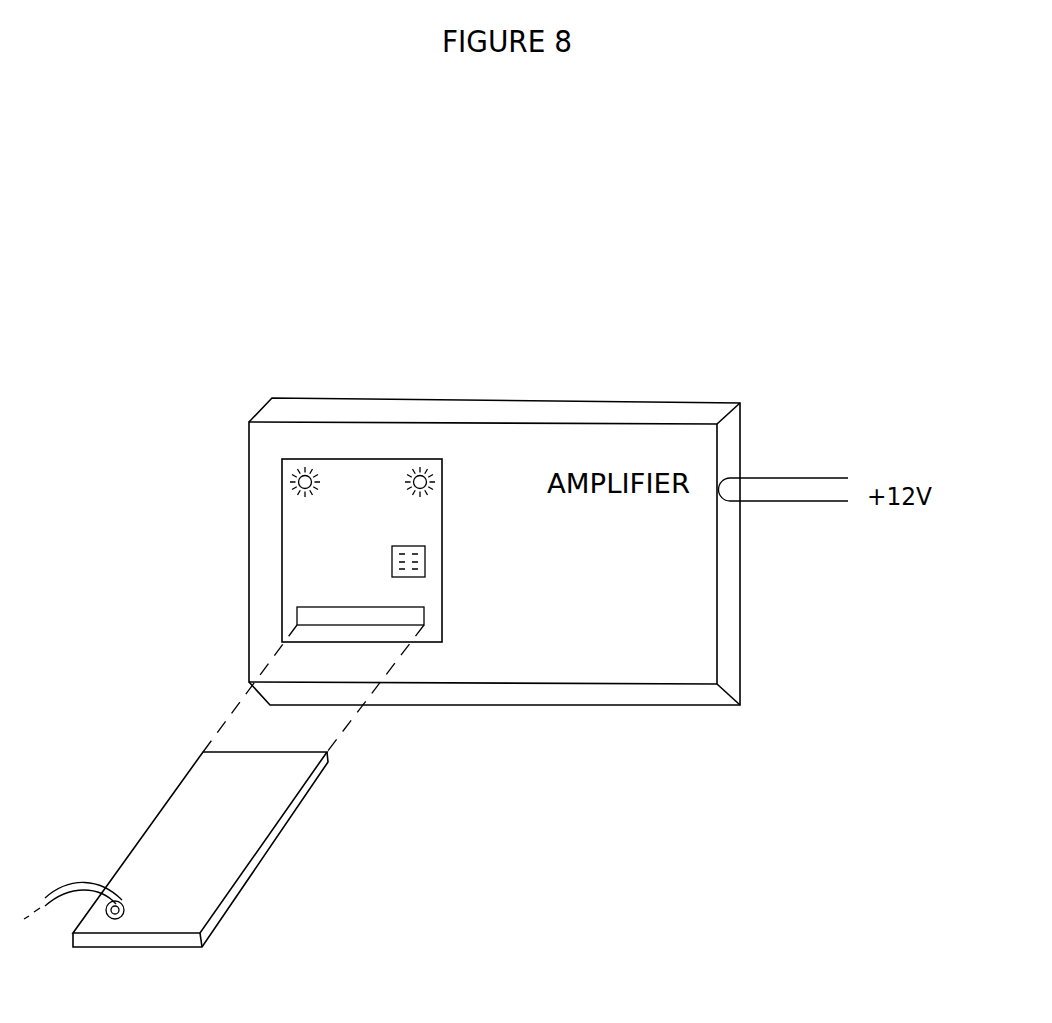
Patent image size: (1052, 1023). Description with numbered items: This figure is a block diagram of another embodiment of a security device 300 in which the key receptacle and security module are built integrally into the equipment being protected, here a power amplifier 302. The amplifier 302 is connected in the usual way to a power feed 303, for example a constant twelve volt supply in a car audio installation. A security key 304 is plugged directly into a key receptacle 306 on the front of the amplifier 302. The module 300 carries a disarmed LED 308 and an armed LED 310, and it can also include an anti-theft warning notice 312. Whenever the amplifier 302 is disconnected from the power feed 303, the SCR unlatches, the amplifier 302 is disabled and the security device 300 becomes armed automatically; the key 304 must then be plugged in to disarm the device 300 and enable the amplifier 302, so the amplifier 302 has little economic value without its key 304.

The security device 300 is at (307, 560).
The power amplifier 302 is at (637, 425).
The power feed 303 is at (784, 478).
The security key 304 is at (215, 867).
The key receptacle 306 is at (385, 620).
The disarmed LED 308 is at (287, 480).
The armed LED 310 is at (432, 471).
The anti-theft warning notice 312 is at (392, 546).